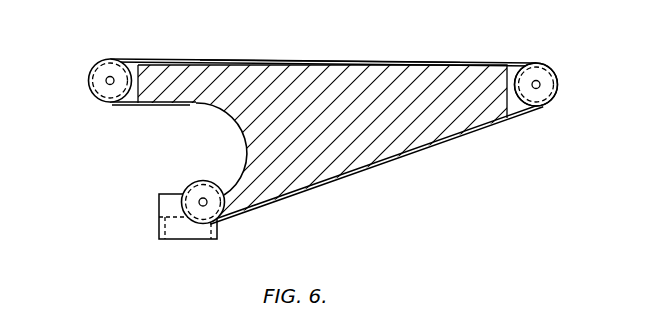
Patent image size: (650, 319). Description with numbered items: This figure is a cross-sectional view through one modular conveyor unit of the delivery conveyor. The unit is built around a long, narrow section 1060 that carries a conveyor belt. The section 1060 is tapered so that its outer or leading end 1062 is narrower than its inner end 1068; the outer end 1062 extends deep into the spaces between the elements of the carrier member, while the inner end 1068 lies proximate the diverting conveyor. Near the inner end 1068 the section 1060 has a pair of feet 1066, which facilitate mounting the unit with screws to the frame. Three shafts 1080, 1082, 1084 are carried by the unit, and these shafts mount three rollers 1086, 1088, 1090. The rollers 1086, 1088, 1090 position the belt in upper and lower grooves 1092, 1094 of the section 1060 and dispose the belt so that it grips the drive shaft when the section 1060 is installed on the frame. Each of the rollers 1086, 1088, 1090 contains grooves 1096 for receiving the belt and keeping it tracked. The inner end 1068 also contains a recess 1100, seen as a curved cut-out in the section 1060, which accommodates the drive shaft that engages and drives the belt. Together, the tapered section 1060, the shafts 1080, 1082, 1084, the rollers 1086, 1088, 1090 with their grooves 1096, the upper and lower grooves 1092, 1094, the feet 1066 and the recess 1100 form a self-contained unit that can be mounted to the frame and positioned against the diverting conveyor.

The section 1060 is at (300, 72).
The outer end 1062 is at (515, 63).
The feet 1066 is at (179, 232).
The inner end 1068 is at (211, 61).
The shaft 1080 is at (106, 80).
The shaft 1082 is at (540, 89).
The shaft 1084 is at (201, 201).
The roller 1086 is at (110, 59).
The roller 1088 is at (558, 80).
The roller 1090 is at (221, 219).
The upper groove 1092 is at (380, 61).
The lower groove 1094 is at (403, 158).
The grooves 1096 is at (93, 61).
The recess 1100 is at (238, 126).